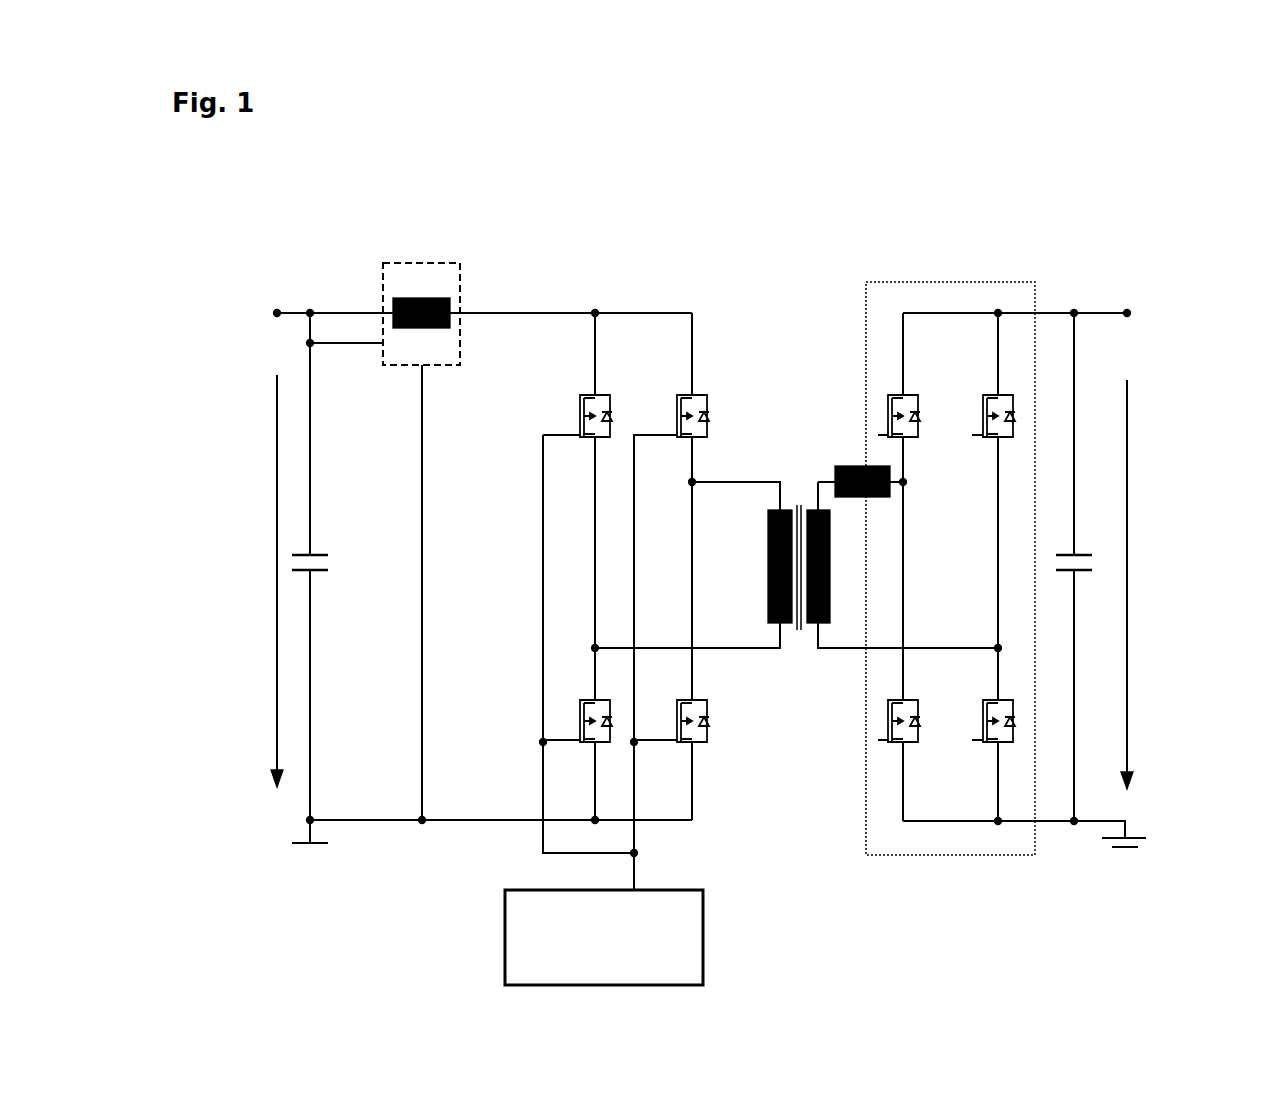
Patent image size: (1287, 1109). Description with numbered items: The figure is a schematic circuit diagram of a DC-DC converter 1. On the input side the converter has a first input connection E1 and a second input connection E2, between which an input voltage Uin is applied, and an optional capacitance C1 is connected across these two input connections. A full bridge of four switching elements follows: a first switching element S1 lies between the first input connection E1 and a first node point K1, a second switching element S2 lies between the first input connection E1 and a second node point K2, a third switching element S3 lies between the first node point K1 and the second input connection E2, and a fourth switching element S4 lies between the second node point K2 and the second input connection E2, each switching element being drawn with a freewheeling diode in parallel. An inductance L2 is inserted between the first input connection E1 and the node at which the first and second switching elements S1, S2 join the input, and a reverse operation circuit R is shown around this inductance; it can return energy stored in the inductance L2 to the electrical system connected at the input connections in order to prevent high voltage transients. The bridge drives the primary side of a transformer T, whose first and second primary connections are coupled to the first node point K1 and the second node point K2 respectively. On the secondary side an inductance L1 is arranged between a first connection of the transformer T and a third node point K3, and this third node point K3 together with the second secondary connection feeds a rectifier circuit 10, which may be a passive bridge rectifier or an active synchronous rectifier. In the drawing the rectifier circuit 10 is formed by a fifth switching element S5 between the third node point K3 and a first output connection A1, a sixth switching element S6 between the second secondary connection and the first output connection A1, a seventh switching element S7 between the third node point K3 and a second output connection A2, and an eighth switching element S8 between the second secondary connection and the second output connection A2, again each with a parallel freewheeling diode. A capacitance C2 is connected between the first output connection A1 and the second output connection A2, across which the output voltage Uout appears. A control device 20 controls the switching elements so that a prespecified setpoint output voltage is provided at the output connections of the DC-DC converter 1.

The DC-DC converter 1 is at (612, 215).
The rectifier circuit 10 is at (948, 860).
The control device 20 is at (703, 940).
The first input connection E1 is at (258, 313).
The second input connection E2 is at (290, 820).
The first output connection A1 is at (1150, 313).
The second output connection A2 is at (1150, 823).
The reverse operation circuit R is at (430, 263).
The inductance L2 is at (435, 328).
The inductance L1 is at (858, 466).
The capacitance C1 is at (318, 555).
The capacitance C2 is at (1078, 555).
The first switching element S1 is at (595, 392).
The second switching element S2 is at (700, 393).
The third switching element S3 is at (585, 697).
The fourth switching element S4 is at (695, 745).
The fifth switching element S5 is at (900, 392).
The sixth switching element S6 is at (995, 392).
The seventh switching element S7 is at (885, 745).
The eighth switching element S8 is at (985, 745).
The first node point K1 is at (595, 645).
The second node point K2 is at (690, 485).
The third node point K3 is at (908, 484).
The transformer T is at (768, 560).
The input voltage Uin is at (277, 572).
The output voltage Uout is at (1128, 572).